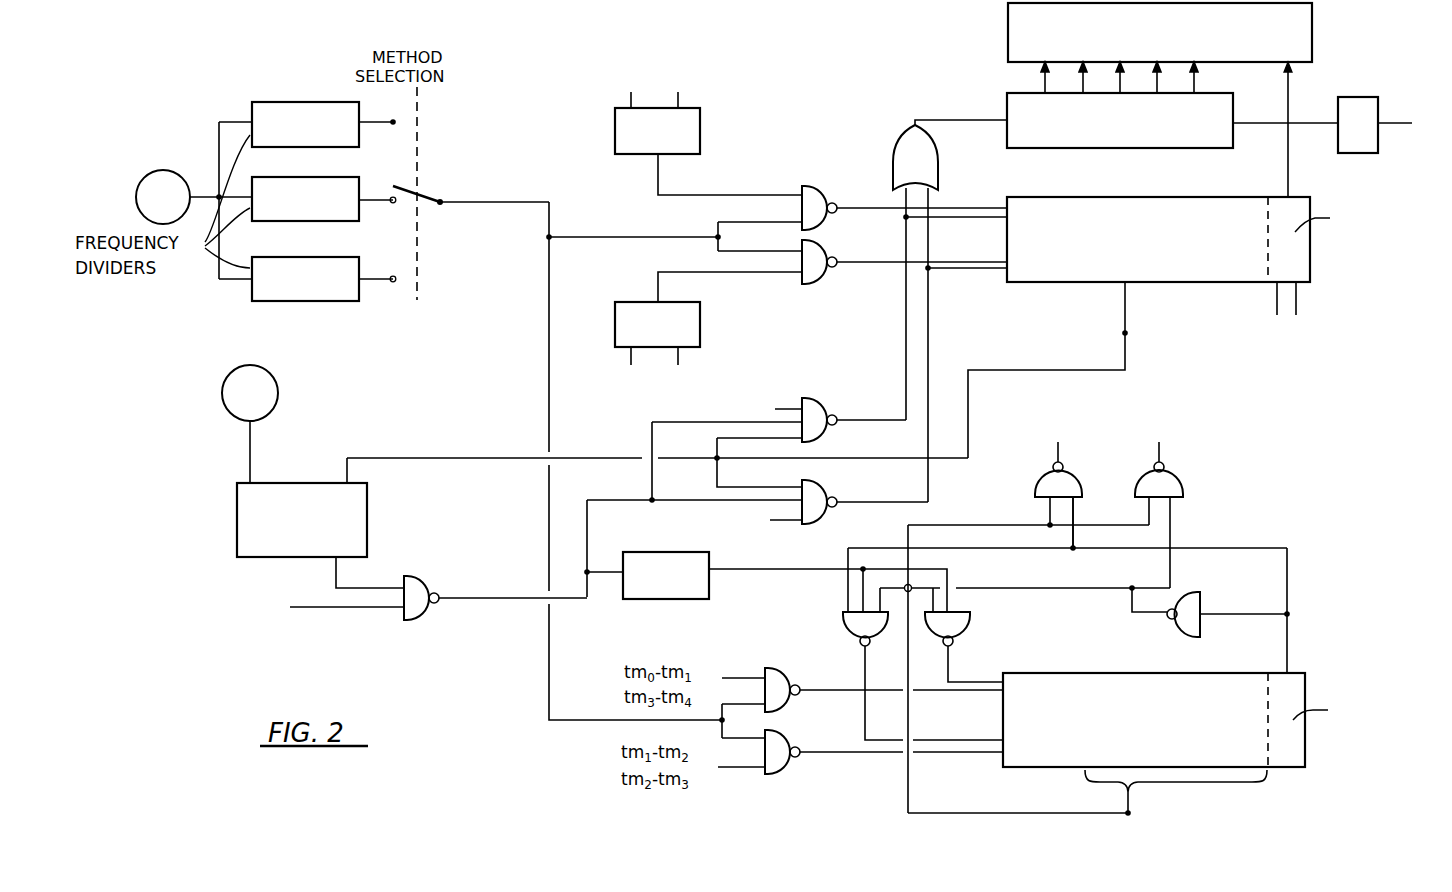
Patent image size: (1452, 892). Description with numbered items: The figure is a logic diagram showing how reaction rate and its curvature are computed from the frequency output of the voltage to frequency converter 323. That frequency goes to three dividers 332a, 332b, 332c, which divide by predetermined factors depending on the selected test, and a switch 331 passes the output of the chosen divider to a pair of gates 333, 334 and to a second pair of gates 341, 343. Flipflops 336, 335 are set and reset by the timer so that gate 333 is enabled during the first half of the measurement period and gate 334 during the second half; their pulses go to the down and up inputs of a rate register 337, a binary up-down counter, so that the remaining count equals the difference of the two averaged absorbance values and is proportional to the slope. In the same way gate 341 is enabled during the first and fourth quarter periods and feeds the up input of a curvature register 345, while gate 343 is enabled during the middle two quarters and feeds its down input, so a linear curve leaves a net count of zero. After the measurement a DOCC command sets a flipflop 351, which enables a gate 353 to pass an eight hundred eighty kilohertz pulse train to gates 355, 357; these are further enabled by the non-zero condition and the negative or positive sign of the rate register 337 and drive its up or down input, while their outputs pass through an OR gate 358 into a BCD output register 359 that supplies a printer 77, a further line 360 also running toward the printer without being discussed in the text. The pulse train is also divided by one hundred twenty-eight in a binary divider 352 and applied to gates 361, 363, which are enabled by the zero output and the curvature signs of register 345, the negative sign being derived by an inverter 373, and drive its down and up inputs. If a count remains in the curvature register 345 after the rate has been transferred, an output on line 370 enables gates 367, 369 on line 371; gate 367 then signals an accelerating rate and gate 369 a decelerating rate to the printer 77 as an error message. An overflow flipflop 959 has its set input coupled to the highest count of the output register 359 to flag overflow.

The printer 77 is at (1312, 38).
The voltage to frequency converter 323 is at (184, 171).
The switch 331 is at (428, 192).
The divider 332a is at (320, 102).
The divider 332b is at (320, 178).
The divider 332c is at (320, 258).
The gate 333 is at (822, 188).
The gate 334 is at (820, 252).
The flipflop 335 is at (700, 322).
The flipflop 336 is at (700, 134).
The rate register 337 is at (1119, 197).
The gate 341 is at (773, 669).
The gate 343 is at (780, 744).
The curvature register 345 is at (1104, 673).
The flipflop 351 is at (367, 518).
The binary divider 352 is at (678, 600).
The gate 353 is at (418, 581).
The gate 355 is at (838, 486).
The gate 357 is at (821, 398).
The OR gate 358 is at (906, 146).
The output register 359 is at (1233, 135).
The line to printer 360 is at (1290, 143).
The gate 361 is at (842, 620).
The gate 363 is at (958, 622).
The gate 367 is at (1080, 484).
The gate 369 is at (1175, 488).
The line 370 is at (1042, 814).
The line 371 is at (956, 524).
The inverter 373 is at (1198, 601).
The flipflop 959 is at (1363, 98).